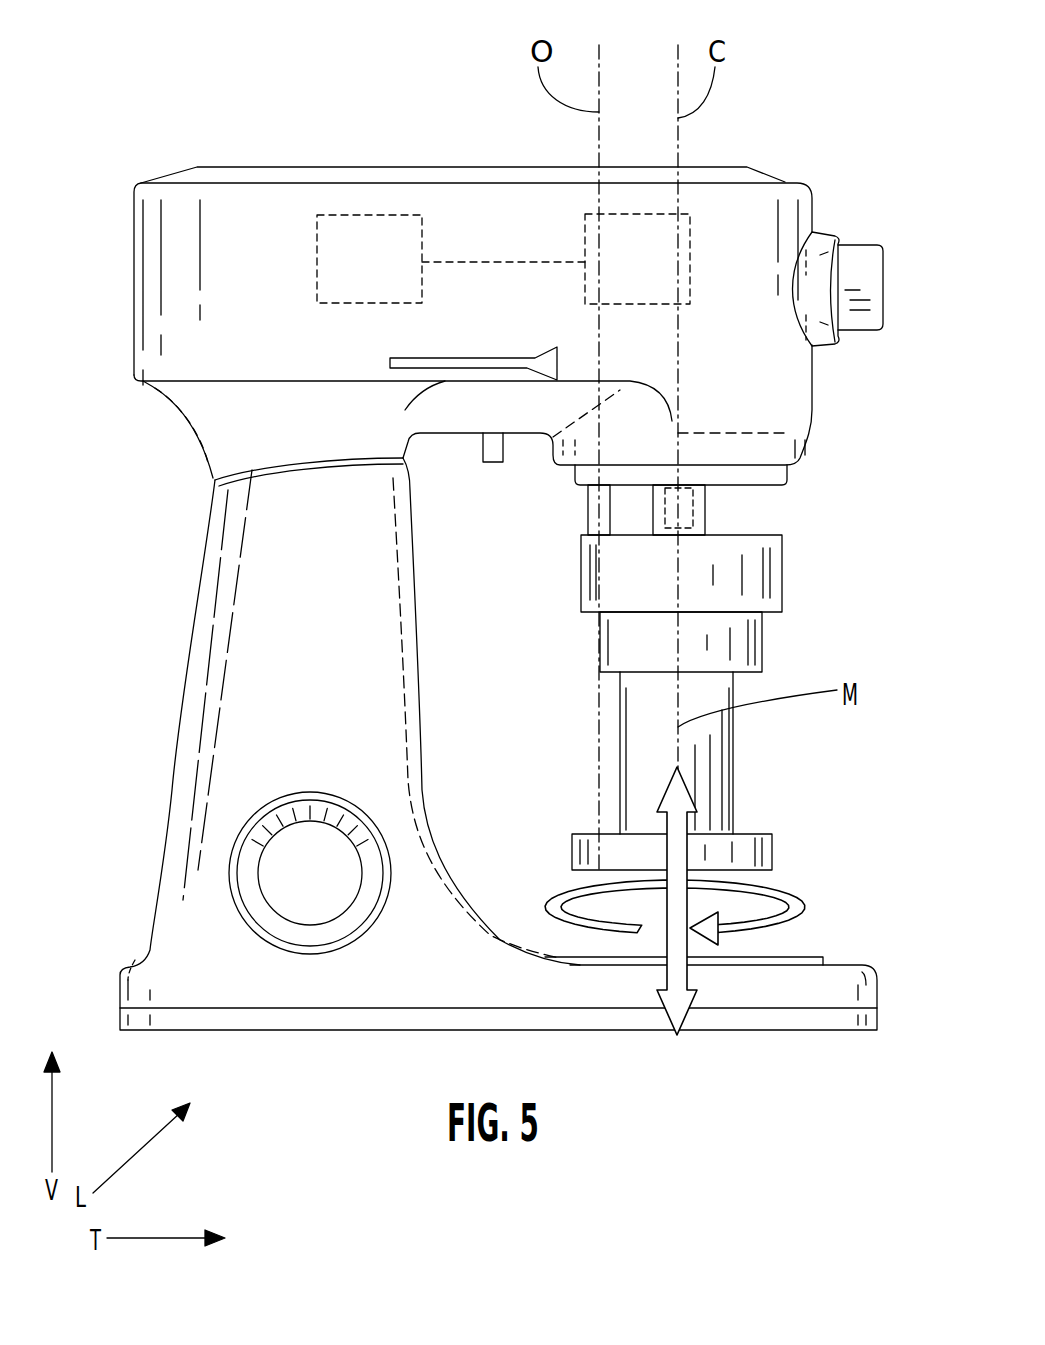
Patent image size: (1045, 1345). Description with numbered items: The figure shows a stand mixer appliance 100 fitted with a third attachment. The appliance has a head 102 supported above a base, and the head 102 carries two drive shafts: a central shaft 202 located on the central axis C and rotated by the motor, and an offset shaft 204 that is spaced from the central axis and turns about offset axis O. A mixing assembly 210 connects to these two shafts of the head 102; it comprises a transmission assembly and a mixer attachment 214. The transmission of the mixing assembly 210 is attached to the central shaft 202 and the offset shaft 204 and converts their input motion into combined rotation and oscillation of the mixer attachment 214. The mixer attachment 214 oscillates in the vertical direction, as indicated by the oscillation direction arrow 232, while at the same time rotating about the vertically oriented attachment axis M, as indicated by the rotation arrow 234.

The stand mixer appliance 100 is at (183, 105).
The head 102 is at (320, 167).
The central shaft 202 is at (693, 512).
The offset shaft 204 is at (588, 517).
The mixing assembly 210 is at (782, 568).
The mixer attachment 214 is at (733, 783).
The oscillation direction arrow 232 is at (667, 940).
The rotation arrow 234 is at (793, 920).